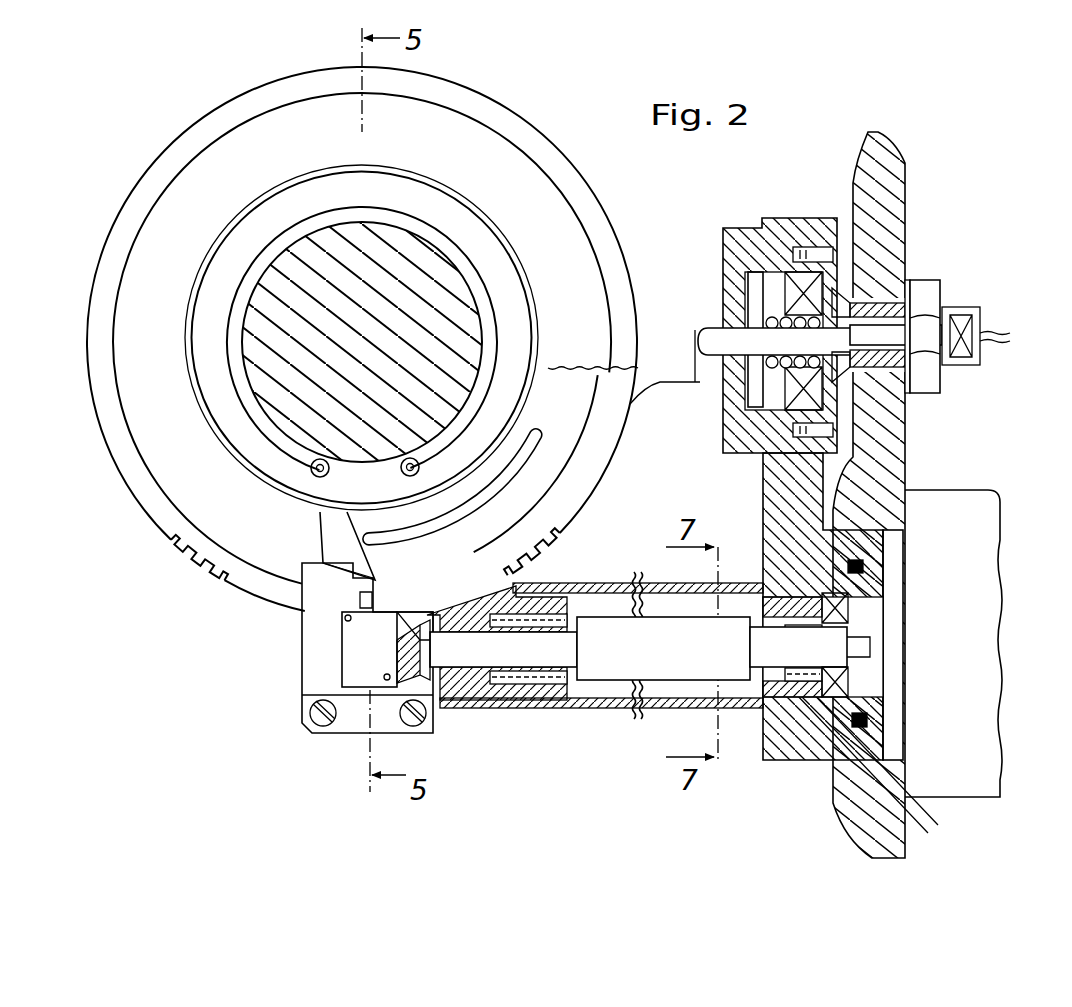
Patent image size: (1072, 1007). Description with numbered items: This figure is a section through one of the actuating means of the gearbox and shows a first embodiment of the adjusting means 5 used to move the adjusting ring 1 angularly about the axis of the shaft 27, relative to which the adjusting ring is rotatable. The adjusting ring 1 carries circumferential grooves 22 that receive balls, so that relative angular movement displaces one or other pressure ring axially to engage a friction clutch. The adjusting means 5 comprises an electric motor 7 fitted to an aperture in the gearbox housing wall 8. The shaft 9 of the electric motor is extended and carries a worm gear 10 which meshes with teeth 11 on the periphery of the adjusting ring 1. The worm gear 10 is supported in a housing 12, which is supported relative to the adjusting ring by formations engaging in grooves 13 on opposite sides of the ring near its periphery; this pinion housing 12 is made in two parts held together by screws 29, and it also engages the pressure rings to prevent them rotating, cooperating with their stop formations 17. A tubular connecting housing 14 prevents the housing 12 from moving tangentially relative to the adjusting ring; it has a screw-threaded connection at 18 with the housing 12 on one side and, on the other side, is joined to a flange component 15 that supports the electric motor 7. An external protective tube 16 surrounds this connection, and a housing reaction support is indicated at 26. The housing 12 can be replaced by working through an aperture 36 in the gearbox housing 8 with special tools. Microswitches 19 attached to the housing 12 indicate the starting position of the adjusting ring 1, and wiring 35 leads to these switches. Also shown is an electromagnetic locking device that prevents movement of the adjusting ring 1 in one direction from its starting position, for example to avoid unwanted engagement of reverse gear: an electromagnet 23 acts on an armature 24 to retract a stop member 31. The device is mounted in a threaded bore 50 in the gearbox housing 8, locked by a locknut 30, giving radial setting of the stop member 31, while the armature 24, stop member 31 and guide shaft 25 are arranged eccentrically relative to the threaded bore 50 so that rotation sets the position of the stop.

The adjusting ring 1 is at (505, 128).
The adjusting means 5 is at (603, 735).
The electric motor 7 is at (980, 544).
The gearbox housing wall 8 is at (878, 212).
The shaft of the electric motor 9 is at (833, 638).
The worm gear 10 is at (420, 622).
The teeth 11 is at (212, 566).
The housing 12 is at (323, 633).
The grooves 13 is at (407, 572).
The tubular connecting housing 14 is at (600, 668).
The flange component 15 is at (870, 733).
The external protective tube 16 is at (680, 702).
The stop formations 17 is at (300, 582).
The screw-threaded connection 18 is at (515, 692).
The microswitches 19 is at (383, 680).
The grooves 22 is at (538, 432).
The electromagnet 23 is at (802, 268).
The armature 24 is at (758, 295).
The guide shaft 25 is at (822, 350).
The housing reaction support 26 is at (795, 512).
The shaft 27 is at (290, 346).
The screws 29 is at (417, 724).
The locknut 30 is at (936, 294).
The stop member 31 is at (704, 326).
The wiring 35 is at (650, 692).
The aperture 36 is at (848, 566).
The threaded bore 50 is at (872, 304).